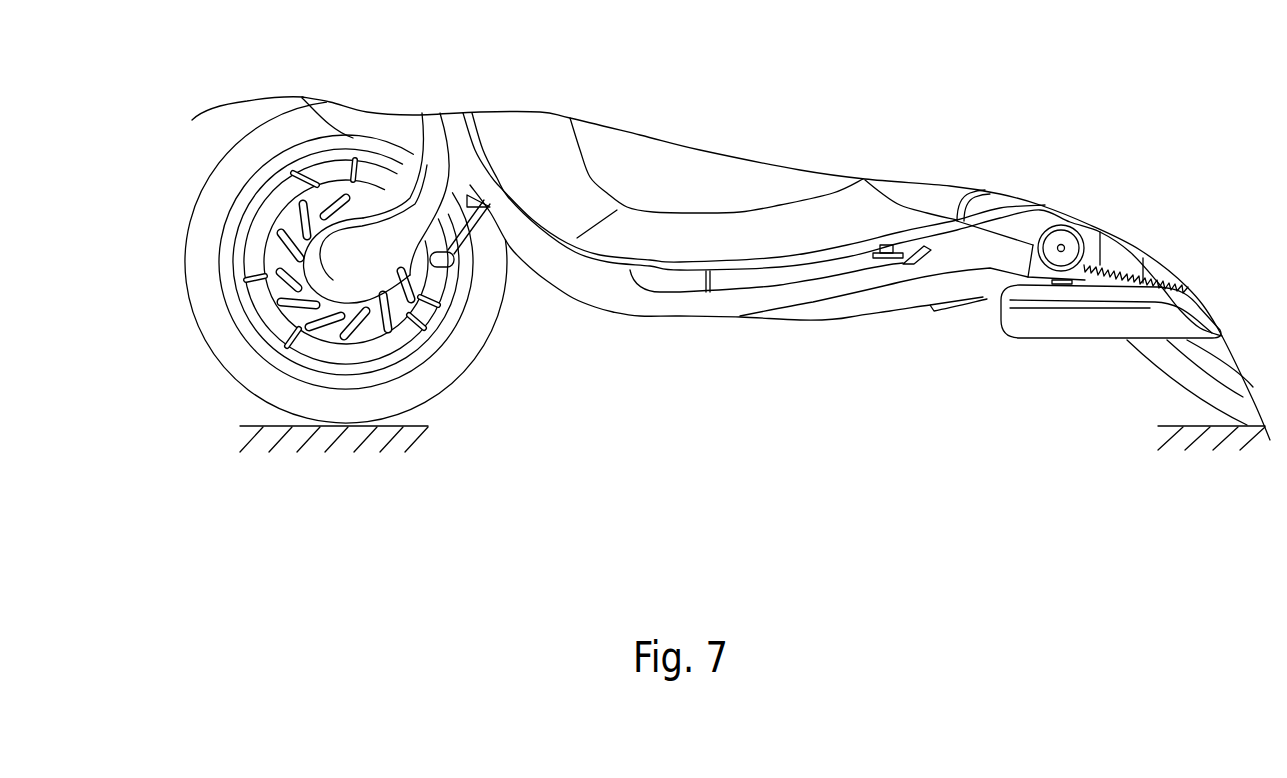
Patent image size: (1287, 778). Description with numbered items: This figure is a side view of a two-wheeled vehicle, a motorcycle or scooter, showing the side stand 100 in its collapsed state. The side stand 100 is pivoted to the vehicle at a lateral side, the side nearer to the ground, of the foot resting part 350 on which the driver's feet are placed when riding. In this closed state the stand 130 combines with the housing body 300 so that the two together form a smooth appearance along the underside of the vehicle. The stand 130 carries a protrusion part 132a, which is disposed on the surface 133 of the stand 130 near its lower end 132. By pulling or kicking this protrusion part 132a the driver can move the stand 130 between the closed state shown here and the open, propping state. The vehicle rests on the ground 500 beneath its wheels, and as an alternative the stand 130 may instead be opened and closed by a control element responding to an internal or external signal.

The side stand 100 is at (951, 432).
The stand 130 is at (790, 276).
The lower end 132 is at (916, 258).
The protrusion part 132a is at (882, 258).
The surface 133 is at (838, 270).
The housing body 300 is at (673, 280).
The foot resting part 350 is at (628, 232).
The ground surface 500 is at (258, 427).